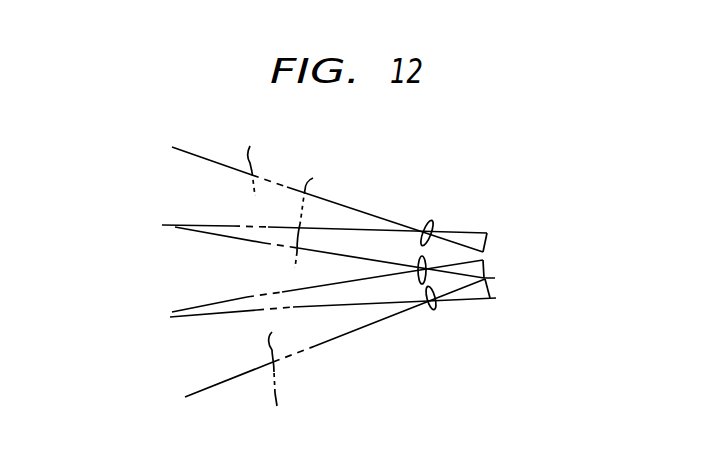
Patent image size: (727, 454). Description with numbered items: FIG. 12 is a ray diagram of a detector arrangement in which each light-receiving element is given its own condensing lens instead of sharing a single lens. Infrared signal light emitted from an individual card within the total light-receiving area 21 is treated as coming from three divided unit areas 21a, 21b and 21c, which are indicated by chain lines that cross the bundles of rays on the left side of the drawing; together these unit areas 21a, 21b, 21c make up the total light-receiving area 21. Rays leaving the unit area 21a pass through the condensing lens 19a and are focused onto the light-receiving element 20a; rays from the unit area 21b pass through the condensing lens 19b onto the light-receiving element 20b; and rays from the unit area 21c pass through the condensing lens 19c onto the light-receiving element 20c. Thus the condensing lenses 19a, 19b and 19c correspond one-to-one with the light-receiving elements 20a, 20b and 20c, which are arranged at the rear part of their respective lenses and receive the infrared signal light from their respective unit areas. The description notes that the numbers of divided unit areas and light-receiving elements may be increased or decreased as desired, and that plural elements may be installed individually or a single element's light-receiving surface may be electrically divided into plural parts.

The condensing lens 19a is at (429, 220).
The condensing lens 19b is at (423, 257).
The condensing lens 19c is at (433, 312).
The light-receiving element 20a is at (488, 234).
The light-receiving element 20b is at (484, 260).
The light-receiving element 20c is at (488, 288).
The total light-receiving area 21 is at (153, 288).
The unit area 21a is at (260, 154).
The unit area 21b is at (322, 208).
The unit area 21c is at (278, 382).